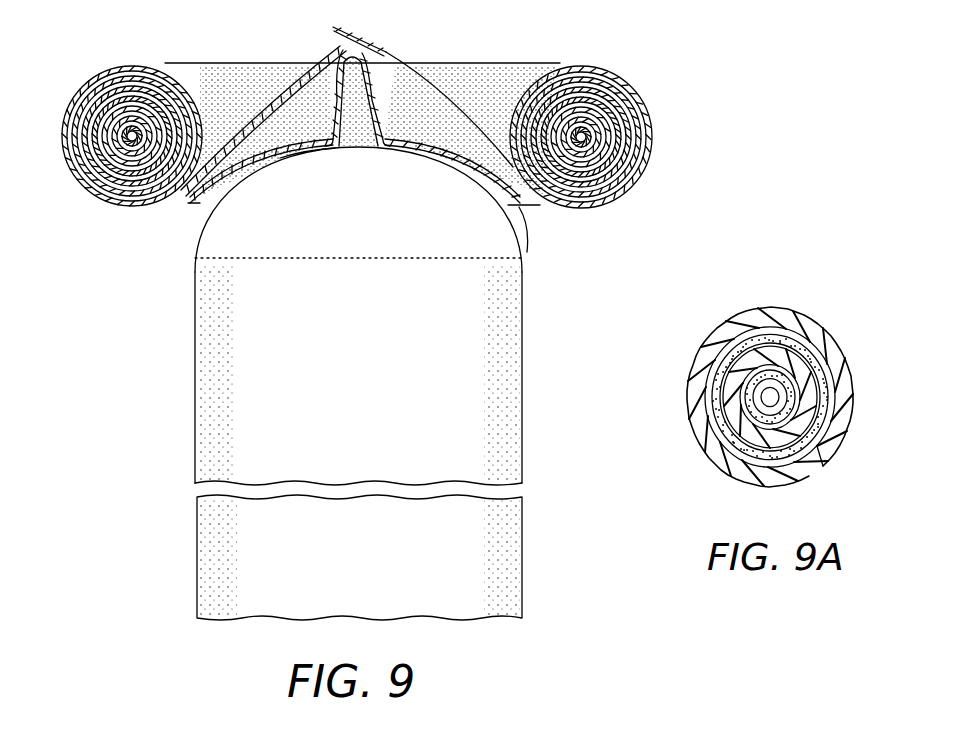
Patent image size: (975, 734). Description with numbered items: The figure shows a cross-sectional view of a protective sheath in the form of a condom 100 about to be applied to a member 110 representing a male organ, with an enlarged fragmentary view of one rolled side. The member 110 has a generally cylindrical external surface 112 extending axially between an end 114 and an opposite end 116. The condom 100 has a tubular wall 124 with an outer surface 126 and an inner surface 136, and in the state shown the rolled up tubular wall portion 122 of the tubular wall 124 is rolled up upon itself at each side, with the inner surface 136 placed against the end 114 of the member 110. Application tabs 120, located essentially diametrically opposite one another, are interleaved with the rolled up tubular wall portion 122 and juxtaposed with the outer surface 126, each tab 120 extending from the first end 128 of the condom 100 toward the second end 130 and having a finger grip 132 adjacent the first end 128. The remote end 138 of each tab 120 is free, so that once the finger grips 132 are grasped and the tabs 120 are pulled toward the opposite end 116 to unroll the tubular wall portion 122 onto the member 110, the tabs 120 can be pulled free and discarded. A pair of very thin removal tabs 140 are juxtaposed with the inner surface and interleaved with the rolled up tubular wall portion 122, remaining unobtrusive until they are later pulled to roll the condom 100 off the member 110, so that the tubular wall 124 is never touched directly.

In FIG. 9, the condom 100 is at (62, 92).
In FIG. 9A, the condom 100 is at (812, 306).
In FIG. 9, the member 110 is at (185, 388).
In FIG. 9, the external surface 112 is at (195, 443).
In FIG. 9, the end 114 is at (372, 108).
In FIG. 9, the opposite end 116 is at (197, 613).
In FIG. 9, the application tabs 120 is at (250, 110).
In FIG. 9A, the application tabs 120 is at (752, 392).
In FIG. 9, the rolled up tubular wall portion 122 is at (109, 66).
In FIG. 9, the tubular wall 124 is at (151, 203).
In FIG. 9, the outer surface 126 is at (262, 150).
In FIG. 9, the first end 128 is at (410, 143).
In FIG. 9, the second end 130 is at (100, 196).
In FIG. 9A, the second end 130 is at (797, 390).
In FIG. 9, the finger grip 132 is at (322, 58).
In FIG. 9, the inner surface 136 is at (303, 150).
In FIG. 9, the remote end 138 is at (150, 112).
In FIG. 9A, the remote end 138 is at (710, 433).
In FIG. 9, the removal tabs 140 is at (193, 197).
In FIG. 9A, the removal tabs 140 is at (797, 417).